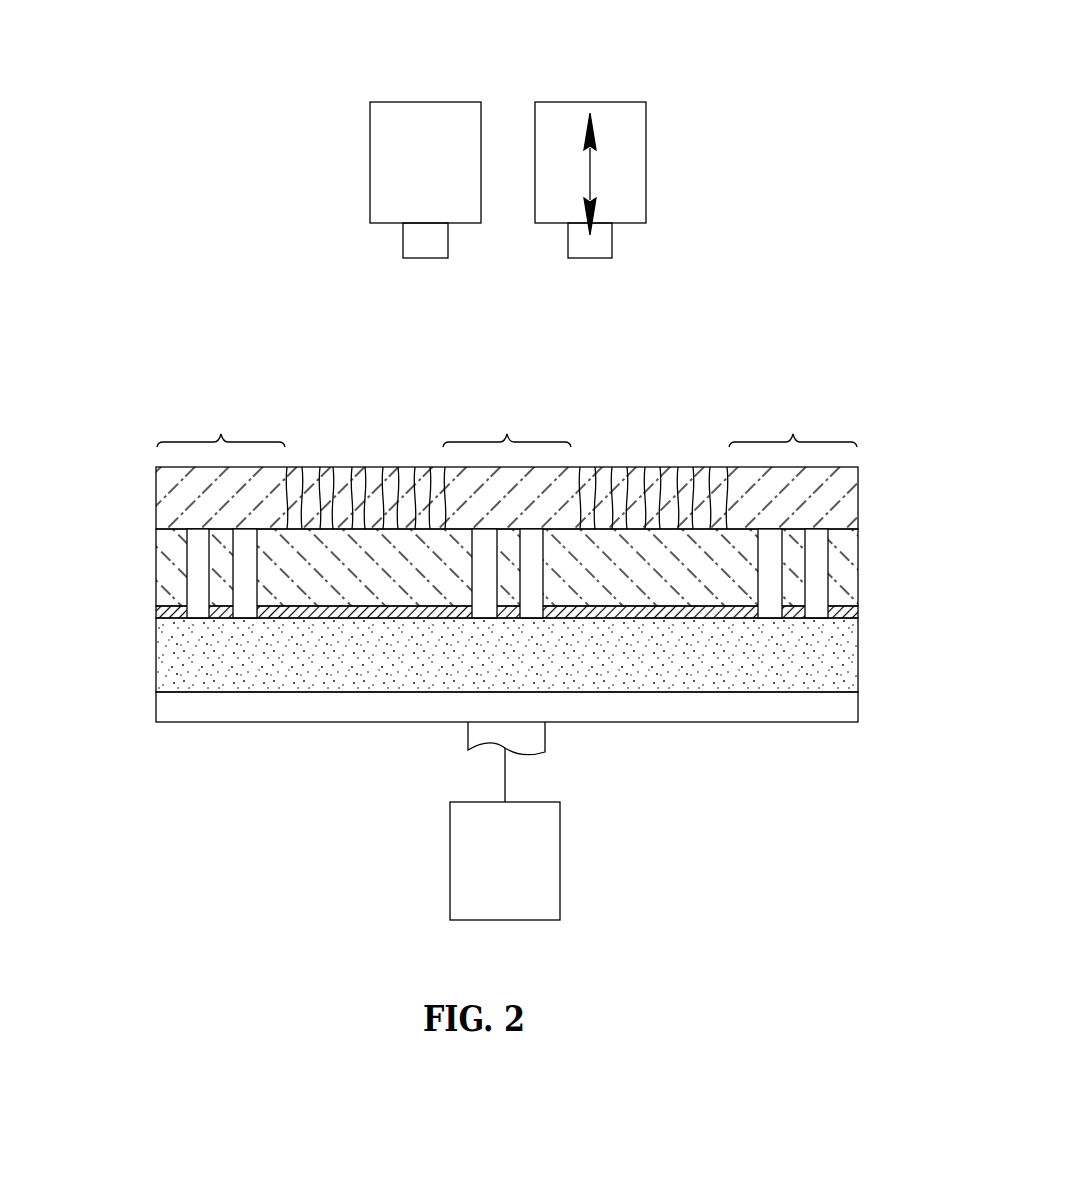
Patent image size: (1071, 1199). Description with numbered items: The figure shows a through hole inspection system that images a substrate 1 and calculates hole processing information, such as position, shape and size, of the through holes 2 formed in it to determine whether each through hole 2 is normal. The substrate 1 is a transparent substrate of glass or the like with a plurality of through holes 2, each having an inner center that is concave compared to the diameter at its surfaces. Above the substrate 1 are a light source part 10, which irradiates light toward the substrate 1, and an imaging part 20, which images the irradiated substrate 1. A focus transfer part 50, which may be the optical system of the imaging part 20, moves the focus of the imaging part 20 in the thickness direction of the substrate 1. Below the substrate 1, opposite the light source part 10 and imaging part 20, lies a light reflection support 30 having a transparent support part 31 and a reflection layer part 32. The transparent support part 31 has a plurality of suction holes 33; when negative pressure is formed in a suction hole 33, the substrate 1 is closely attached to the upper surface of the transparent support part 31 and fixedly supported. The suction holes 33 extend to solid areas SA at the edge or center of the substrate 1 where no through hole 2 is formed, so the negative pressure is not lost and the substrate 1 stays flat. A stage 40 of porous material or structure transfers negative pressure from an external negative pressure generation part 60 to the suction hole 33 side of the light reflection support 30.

The substrate 1 is at (156, 497).
The through hole 2 is at (360, 467).
The light source part 10 is at (370, 160).
The imaging part 20 is at (646, 167).
The light reflection support 30 is at (472, 585).
The transparent support part 31 is at (156, 566).
The reflection layer part 32 is at (156, 610).
The suction hole 33 is at (768, 552).
The stage 40 is at (156, 660).
The focus transfer part 50 is at (592, 165).
The negative pressure generation part 60 is at (450, 862).
The solid area SA is at (507, 417).